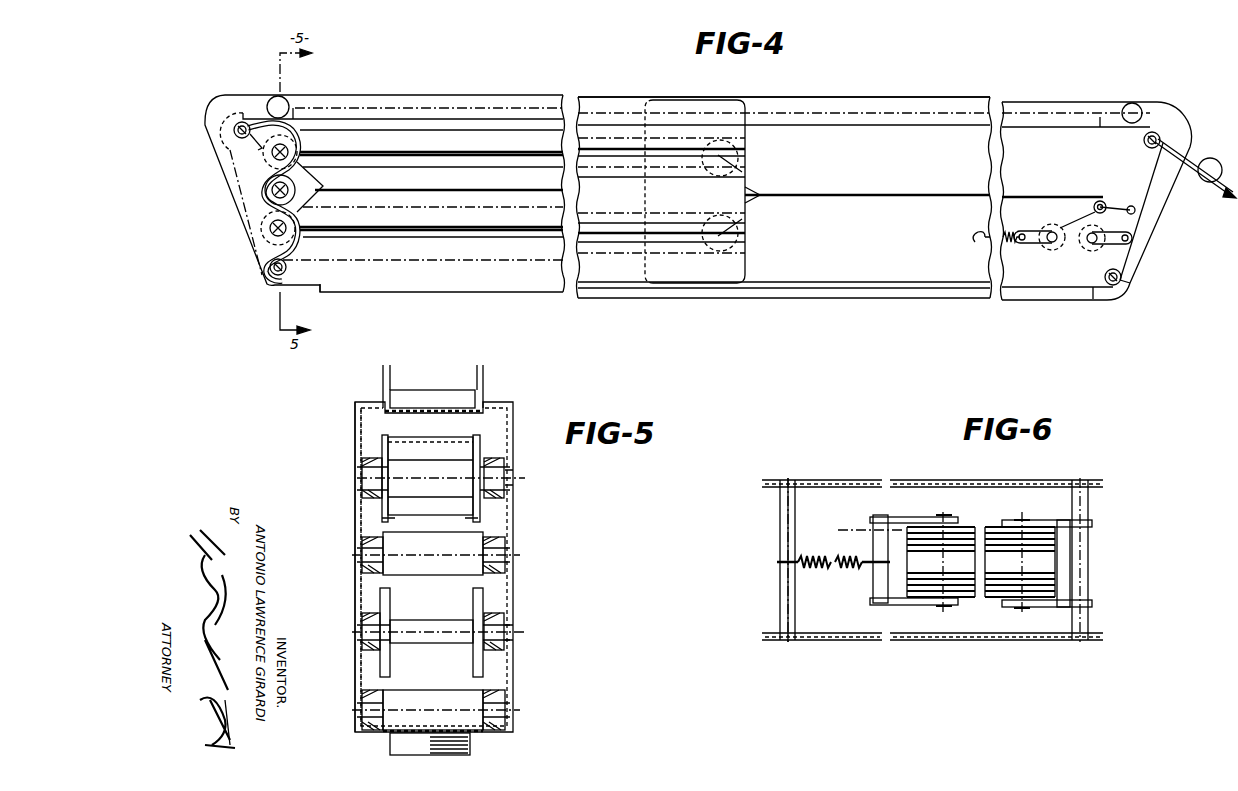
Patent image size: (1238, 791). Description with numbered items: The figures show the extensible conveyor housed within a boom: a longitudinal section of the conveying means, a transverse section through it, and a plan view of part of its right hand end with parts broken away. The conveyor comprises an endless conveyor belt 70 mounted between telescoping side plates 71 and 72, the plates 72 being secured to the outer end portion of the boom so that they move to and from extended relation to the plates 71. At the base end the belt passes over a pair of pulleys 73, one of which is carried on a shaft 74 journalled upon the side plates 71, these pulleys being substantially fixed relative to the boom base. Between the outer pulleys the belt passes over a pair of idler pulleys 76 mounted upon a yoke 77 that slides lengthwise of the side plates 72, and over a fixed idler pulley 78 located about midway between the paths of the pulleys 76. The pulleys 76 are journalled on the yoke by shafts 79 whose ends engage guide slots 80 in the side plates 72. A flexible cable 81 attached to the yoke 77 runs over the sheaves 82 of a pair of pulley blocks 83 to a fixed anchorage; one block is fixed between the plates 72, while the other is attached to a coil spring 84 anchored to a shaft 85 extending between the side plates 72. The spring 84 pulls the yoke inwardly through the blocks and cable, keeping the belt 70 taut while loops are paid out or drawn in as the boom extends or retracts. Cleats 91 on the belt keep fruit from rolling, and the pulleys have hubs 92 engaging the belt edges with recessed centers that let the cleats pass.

In FIG. 4, the conveyor belt 70 is at (897, 125).
In FIG. 5, the conveyor belt 70 is at (420, 437).
In FIG. 4, the side plate 71 is at (800, 95).
In FIG. 5, the side plate 71 is at (360, 434).
In FIG. 4, the side plate 72 is at (737, 103).
In FIG. 5, the side plate 72 is at (362, 465).
In FIG. 4, the pulley 73 is at (241, 140).
In FIG. 5, the pulley 73 is at (448, 692).
In FIG. 4, the shaft 74 is at (1117, 290).
In FIG. 4, the idler pulley 76 is at (263, 165).
In FIG. 4, the yoke 77 is at (323, 135).
In FIG. 4, the idler pulley 78 is at (265, 192).
In FIG. 4, the shaft 79 is at (292, 137).
In FIG. 5, the shaft 79 is at (506, 470).
In FIG. 4, the guide slot 80 is at (442, 153).
In FIG. 5, the guide slot 80 is at (365, 478).
In FIG. 4, the flexible cable 81 is at (873, 200).
In FIG. 6, the sheave 82 is at (980, 600).
In FIG. 4, the pulley block 83 is at (1125, 232).
In FIG. 6, the pulley block 83 is at (910, 602).
In FIG. 4, the coil spring 84 is at (1010, 237).
In FIG. 6, the coil spring 84 is at (820, 570).
In FIG. 4, the shaft 85 is at (996, 237).
In FIG. 6, the shaft 85 is at (782, 583).
In FIG. 4, the cleat 91 is at (267, 286).
In FIG. 5, the cleat 91 is at (432, 452).
In FIG. 5, the hub 92 is at (395, 512).